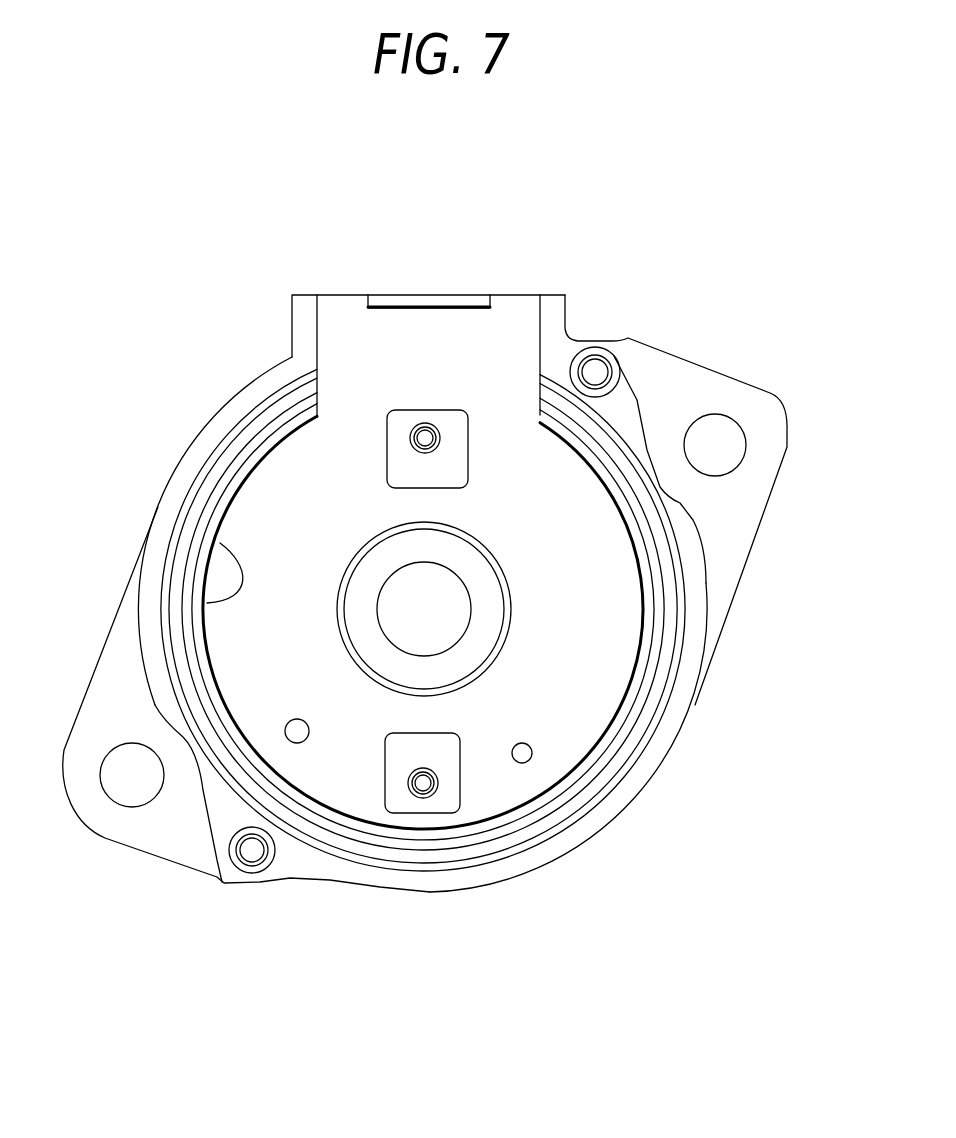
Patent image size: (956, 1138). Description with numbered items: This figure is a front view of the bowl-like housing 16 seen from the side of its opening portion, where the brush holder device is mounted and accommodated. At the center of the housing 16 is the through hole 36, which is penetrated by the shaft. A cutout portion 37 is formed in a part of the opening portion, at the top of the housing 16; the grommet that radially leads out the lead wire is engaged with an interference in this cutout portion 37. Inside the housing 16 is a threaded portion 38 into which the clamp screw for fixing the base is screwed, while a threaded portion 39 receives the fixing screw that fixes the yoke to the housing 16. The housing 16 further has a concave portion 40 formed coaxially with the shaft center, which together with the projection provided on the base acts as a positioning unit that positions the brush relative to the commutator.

The housing 16 is at (730, 518).
The through hole 36 is at (433, 610).
The cutout portion 37 is at (348, 327).
The threaded portion 38 is at (453, 417).
The threaded portion 39 is at (270, 863).
The concave portion 40 is at (220, 543).